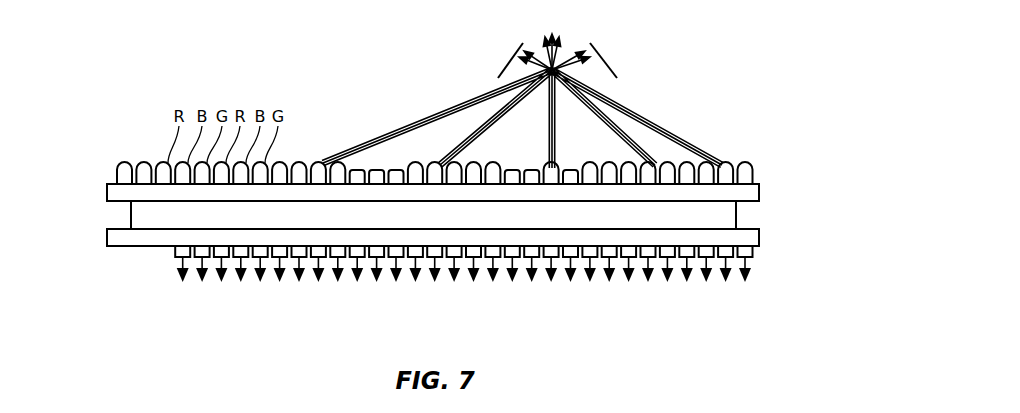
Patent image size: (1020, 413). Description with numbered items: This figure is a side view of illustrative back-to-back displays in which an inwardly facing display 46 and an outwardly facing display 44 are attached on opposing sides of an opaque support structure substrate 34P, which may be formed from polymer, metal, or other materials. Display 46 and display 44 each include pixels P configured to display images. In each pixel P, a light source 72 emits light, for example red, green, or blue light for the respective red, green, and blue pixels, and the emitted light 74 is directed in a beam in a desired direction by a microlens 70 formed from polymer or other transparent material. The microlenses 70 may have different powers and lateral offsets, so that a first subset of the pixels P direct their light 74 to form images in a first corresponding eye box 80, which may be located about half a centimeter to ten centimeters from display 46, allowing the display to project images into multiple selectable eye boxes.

The microlens 70 is at (122, 166).
The light source 72 is at (118, 179).
The support structure substrate 34P is at (131, 214).
The display 46 is at (772, 191).
The display 44 is at (772, 240).
The light 74 is at (423, 118).
The eye box 80 is at (616, 68).
The pixel P is at (134, 153).